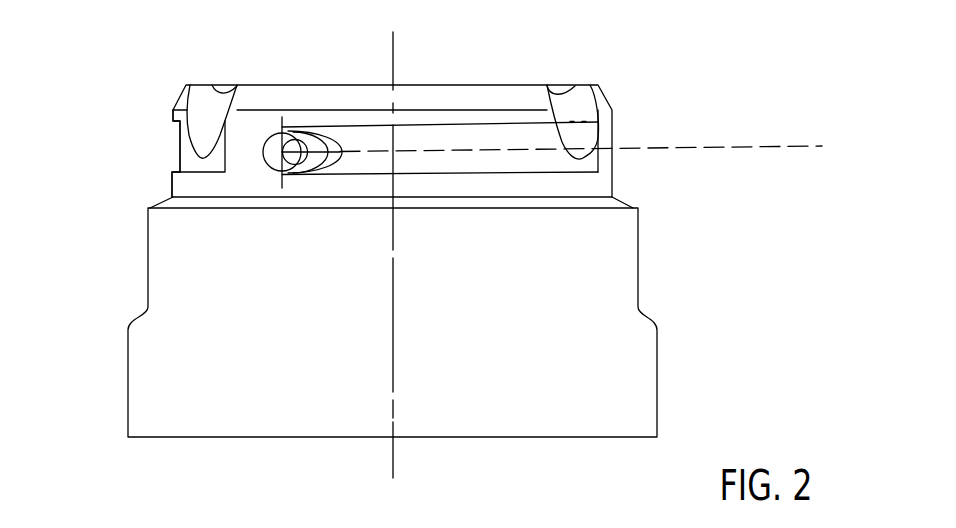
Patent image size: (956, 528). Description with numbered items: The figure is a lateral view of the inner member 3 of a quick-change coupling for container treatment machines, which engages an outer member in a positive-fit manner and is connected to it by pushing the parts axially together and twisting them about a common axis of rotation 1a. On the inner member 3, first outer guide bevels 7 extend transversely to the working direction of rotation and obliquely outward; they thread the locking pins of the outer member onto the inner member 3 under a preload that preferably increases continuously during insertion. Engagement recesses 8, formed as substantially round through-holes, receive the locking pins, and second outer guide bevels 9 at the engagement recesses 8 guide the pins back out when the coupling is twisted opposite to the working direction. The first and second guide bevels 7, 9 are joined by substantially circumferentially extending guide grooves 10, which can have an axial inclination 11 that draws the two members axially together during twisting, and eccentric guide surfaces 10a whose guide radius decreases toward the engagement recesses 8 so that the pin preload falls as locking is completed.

The inner member 3 is at (655, 307).
The first outer guide bevels 7 is at (205, 98).
The engagement recesses 8 is at (267, 131).
The second outer guide bevels 9 is at (325, 143).
The guide grooves 10 is at (458, 135).
The eccentric guide surfaces 10a is at (178, 143).
The axial inclination 11 is at (703, 146).
The axis of rotation 1a is at (393, 463).